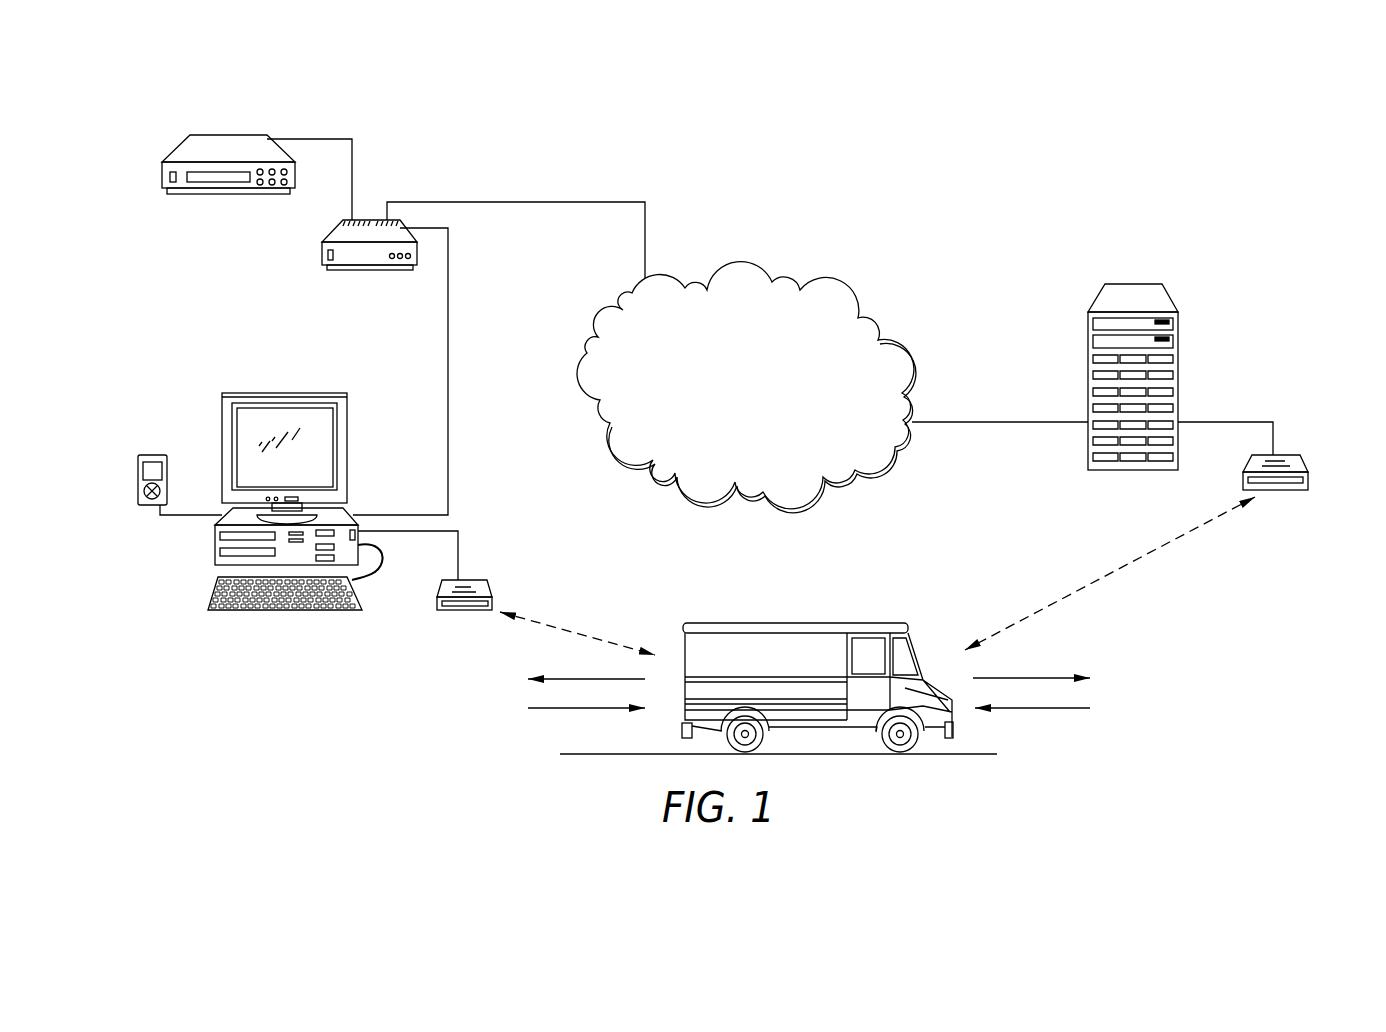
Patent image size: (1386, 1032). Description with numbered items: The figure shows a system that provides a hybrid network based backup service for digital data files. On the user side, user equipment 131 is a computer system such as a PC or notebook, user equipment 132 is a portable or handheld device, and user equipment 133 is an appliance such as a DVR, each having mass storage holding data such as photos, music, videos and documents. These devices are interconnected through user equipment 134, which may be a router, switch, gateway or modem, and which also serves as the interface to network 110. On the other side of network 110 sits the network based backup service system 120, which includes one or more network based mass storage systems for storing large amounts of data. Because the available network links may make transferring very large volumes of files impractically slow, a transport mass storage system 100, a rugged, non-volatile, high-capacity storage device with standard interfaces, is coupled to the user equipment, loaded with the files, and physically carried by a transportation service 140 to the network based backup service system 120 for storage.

The transport mass storage system 100 is at (489, 585).
The network 110 is at (775, 409).
The network based backup service system 120 is at (1088, 341).
The user equipment 131 is at (215, 538).
The user equipment 132 is at (138, 478).
The user equipment 133 is at (224, 196).
The user equipment 134 is at (355, 271).
The transportation service 140 is at (794, 667).